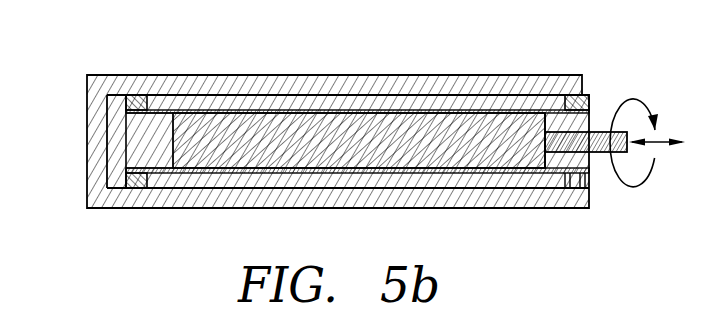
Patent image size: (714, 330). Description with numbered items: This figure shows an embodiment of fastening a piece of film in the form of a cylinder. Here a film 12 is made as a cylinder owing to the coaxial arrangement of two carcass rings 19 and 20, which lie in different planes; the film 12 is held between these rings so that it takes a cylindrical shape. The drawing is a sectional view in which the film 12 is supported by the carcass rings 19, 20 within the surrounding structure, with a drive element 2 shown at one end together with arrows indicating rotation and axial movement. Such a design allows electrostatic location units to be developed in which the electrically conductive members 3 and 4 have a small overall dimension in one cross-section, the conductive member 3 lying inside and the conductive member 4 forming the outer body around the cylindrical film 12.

The drive rod / shaft 2 is at (560, 160).
The electrically conductive member 3 is at (228, 157).
The electrically conductive member 4 is at (273, 86).
The film 12 is at (168, 172).
The carcass ring 19 is at (137, 100).
The carcass ring 20 is at (578, 100).